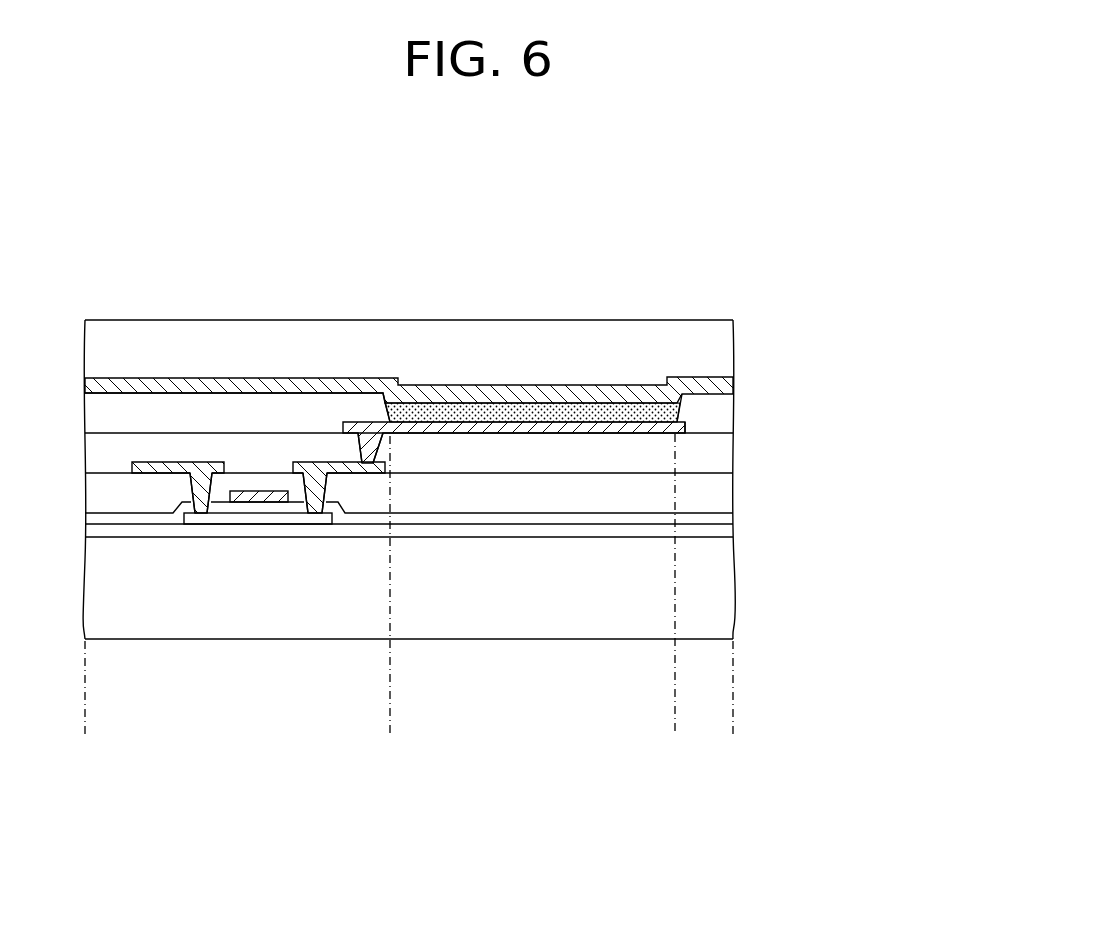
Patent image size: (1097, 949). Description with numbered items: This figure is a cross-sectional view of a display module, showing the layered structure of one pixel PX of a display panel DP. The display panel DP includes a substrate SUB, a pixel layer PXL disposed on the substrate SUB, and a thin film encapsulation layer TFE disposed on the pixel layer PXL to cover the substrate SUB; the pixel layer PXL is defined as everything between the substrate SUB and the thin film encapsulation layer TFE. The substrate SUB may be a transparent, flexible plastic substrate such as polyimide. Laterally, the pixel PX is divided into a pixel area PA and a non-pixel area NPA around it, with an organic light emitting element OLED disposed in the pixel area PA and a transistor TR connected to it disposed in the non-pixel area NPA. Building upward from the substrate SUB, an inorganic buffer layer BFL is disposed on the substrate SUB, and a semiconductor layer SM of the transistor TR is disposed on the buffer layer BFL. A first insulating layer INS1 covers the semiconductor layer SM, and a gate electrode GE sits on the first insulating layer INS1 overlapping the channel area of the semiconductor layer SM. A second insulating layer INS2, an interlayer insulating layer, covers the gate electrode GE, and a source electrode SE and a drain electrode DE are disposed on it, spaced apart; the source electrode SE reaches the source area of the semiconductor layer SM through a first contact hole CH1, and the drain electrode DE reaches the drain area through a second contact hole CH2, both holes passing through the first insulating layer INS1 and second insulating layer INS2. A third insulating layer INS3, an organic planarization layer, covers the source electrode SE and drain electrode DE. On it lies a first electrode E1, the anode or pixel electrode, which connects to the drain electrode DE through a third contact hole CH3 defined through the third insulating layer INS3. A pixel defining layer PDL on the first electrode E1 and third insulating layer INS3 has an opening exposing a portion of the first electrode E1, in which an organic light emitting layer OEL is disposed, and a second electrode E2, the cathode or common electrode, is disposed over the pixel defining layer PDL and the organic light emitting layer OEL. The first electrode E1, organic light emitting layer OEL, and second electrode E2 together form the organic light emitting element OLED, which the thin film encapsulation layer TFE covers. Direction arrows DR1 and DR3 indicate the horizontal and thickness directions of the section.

The substrate SUB is at (725, 588).
The buffer layer BFL is at (725, 530).
The semiconductor layer SM is at (292, 518).
The first insulating layer INS1 is at (725, 522).
The gate electrode GE is at (243, 502).
The second insulating layer INS2 is at (725, 495).
The source electrode SE is at (147, 474).
The drain electrode DE is at (358, 474).
The transistor TR is at (172, 678).
The first contact hole CH1 is at (188, 485).
The second contact hole CH2 is at (302, 489).
The third contact hole CH3 is at (356, 445).
The third insulating layer INS3 is at (723, 453).
The first electrode E1 is at (448, 428).
The organic light emitting layer OEL is at (488, 407).
The second electrode E2 is at (540, 395).
The organic light emitting element OLED is at (443, 258).
The pixel defining layer PDL is at (723, 413).
The thin film encapsulation layer TFE is at (727, 352).
The pixel layer PXL is at (826, 402).
The display panel DP is at (889, 340).
The pixel PX is at (752, 218).
The non-pixel area NPA is at (390, 731).
The pixel area PA is at (675, 731).
The first direction DR1 is at (83, 908).
The third direction DR3 is at (83, 908).